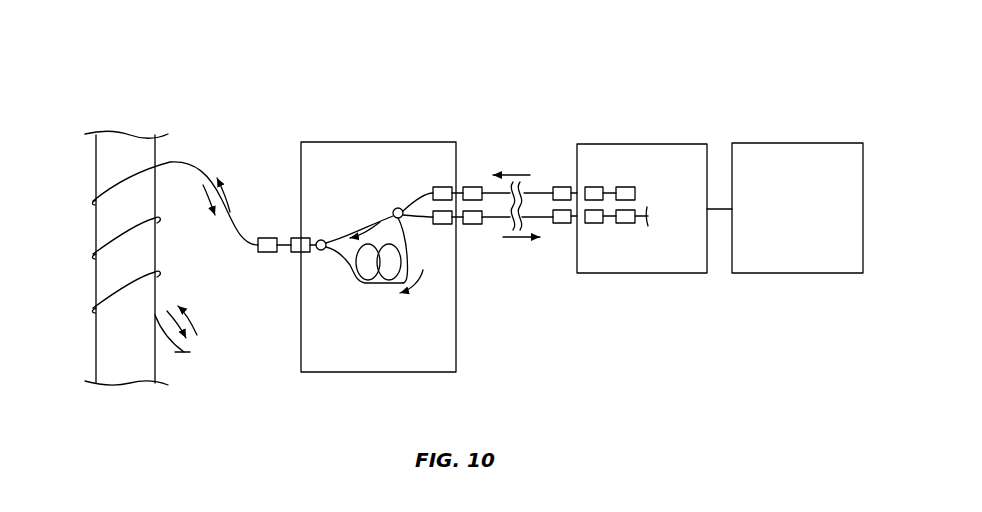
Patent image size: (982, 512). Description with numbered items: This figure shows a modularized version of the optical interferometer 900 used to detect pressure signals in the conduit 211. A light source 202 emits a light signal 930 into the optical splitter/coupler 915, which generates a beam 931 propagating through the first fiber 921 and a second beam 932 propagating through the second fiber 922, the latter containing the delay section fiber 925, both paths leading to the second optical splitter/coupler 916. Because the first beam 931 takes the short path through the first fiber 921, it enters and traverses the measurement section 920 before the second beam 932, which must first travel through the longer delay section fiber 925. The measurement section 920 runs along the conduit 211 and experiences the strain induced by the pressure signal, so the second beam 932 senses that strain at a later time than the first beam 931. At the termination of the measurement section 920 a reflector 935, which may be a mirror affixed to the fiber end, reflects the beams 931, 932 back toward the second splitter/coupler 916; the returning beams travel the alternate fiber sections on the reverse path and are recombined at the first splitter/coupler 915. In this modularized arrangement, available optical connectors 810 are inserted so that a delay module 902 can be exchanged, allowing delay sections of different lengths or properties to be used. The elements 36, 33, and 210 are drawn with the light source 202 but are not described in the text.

The optical interferometer 900 is at (325, 72).
The conduit 211 is at (96, 158).
The measurement section 920 is at (175, 162).
The delay module 902 is at (435, 142).
The optical connector 810 is at (296, 253).
The second optical splitter/coupler 916 is at (316, 242).
The optical splitter/coupler 915 is at (395, 208).
The delay section fiber 925 is at (362, 283).
The first fiber 921 is at (407, 243).
The second fiber 922 is at (412, 262).
The beam 931 is at (222, 187).
The second beam 932 is at (483, 320).
The reflector 935 is at (186, 352).
The light signal 930 is at (510, 176).
The controller 36 is at (668, 144).
The light source 202 is at (636, 192).
The terminator 210 is at (625, 224).
The computer 33 is at (820, 143).